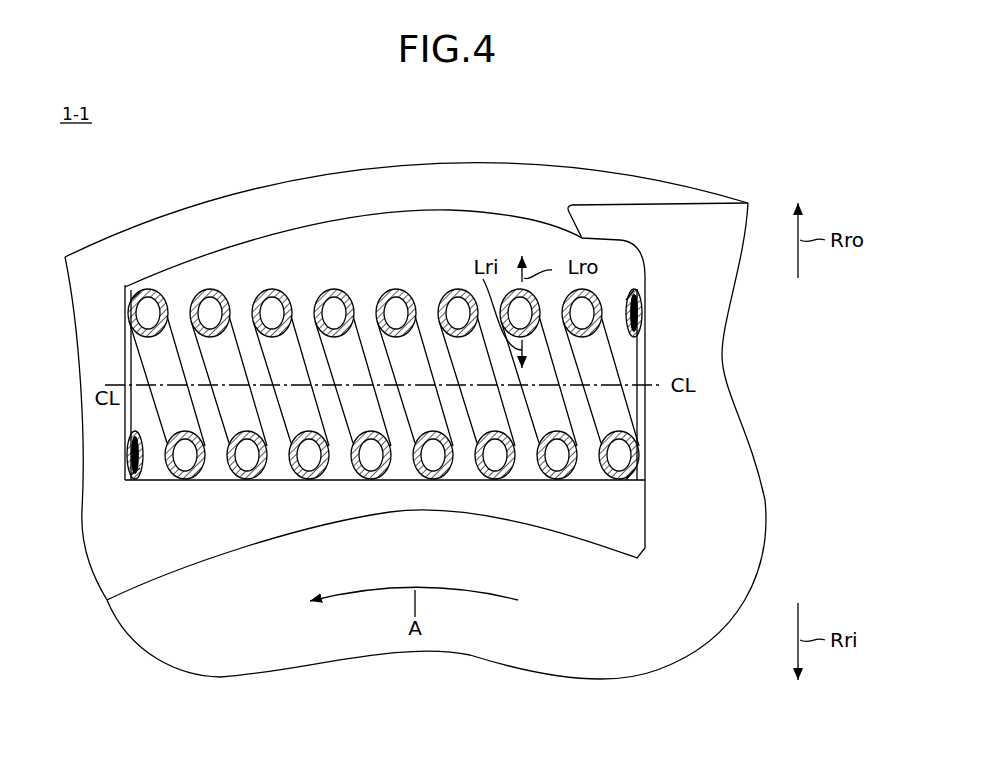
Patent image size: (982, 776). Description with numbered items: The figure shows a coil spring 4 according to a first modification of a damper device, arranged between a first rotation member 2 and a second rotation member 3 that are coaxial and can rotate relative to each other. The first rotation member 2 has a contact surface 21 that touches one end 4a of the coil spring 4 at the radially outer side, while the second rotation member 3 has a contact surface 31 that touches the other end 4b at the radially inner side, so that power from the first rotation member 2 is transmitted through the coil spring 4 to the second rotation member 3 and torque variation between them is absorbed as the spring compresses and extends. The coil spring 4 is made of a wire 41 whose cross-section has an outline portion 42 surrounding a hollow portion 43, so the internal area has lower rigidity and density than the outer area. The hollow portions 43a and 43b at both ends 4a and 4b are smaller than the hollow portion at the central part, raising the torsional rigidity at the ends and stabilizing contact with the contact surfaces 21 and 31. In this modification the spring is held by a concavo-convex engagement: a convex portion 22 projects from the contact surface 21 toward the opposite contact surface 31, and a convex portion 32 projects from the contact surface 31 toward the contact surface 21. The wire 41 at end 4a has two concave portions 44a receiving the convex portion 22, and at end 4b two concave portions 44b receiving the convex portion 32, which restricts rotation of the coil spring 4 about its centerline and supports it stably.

The first rotation member 2 is at (188, 674).
The second rotation member 3 is at (197, 206).
The coil spring 4 is at (367, 384).
The one end of coil spring 4a is at (640, 450).
The other end of coil spring 4b is at (125, 309).
The contact surface 21 is at (641, 400).
The convex portion 22 is at (637, 356).
The contact surface 31 is at (130, 374).
The convex portion 32 is at (130, 421).
The wire 41 is at (334, 290).
The outline portion 42 is at (458, 291).
The hollow portion 43 is at (462, 313).
The hollow portion on one end 43a is at (636, 318).
The hollow portion on other end 43b is at (148, 307).
The concave portions 44a is at (640, 300).
The concave portions 44b is at (128, 320).